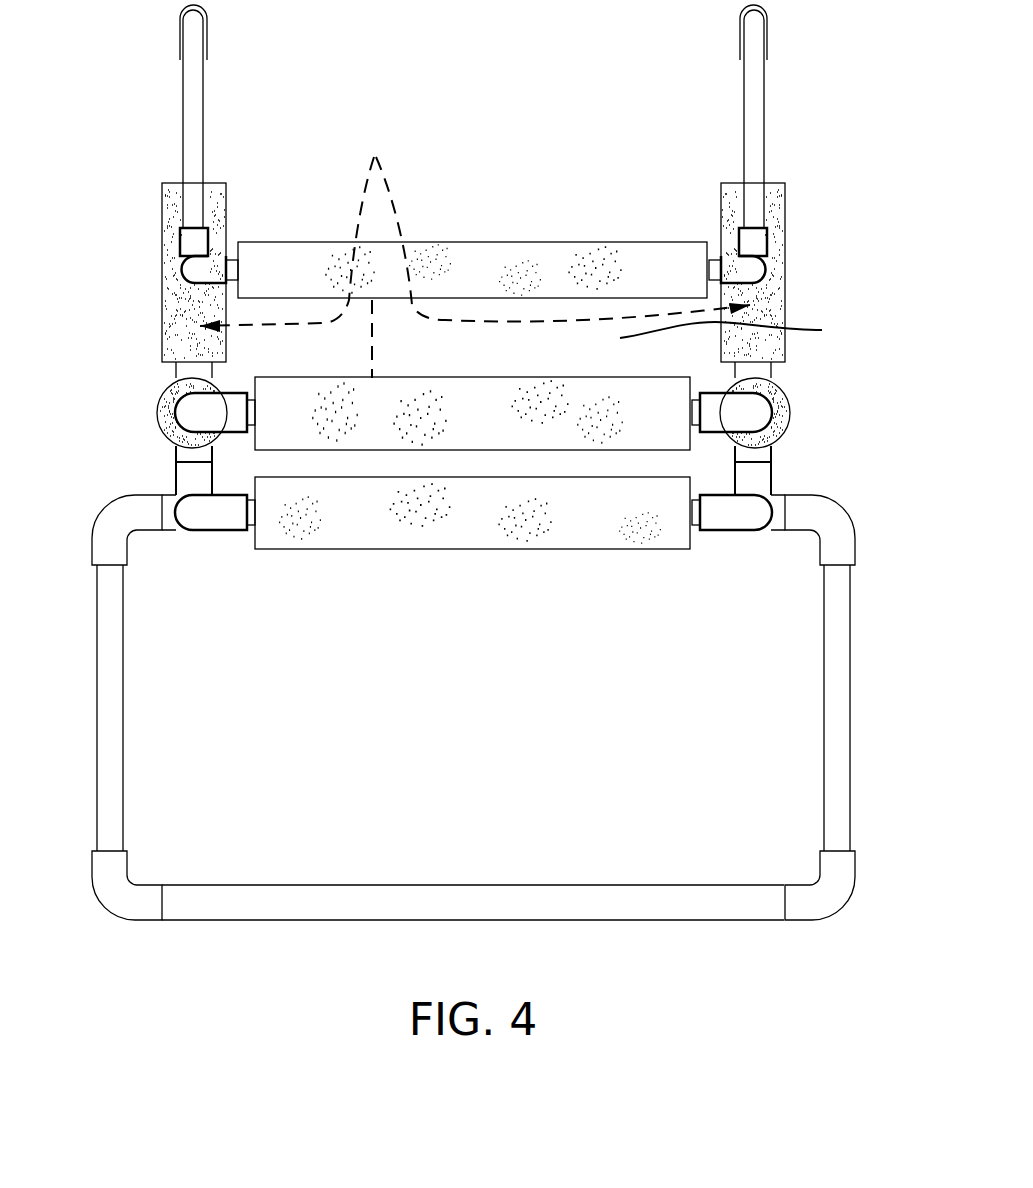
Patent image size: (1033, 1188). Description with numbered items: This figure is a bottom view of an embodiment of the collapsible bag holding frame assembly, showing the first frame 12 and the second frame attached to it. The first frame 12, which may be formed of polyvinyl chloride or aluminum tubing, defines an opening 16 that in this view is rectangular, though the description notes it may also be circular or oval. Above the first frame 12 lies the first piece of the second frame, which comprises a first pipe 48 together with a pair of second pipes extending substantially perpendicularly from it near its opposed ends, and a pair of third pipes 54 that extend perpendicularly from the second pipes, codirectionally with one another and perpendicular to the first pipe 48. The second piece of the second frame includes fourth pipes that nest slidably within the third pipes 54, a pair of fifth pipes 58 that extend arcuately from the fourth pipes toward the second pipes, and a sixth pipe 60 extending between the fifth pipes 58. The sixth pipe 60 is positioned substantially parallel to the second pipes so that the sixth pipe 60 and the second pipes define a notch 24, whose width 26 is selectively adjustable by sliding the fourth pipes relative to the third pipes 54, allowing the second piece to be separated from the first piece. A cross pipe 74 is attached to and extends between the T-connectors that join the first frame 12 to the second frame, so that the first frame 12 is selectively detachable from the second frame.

The first frame 12 is at (552, 767).
The opening 16 is at (708, 708).
The notch 24 is at (744, 329).
The width 26 is at (370, 340).
The first pipe 48 is at (543, 417).
The third pipes 54 is at (475, 222).
The fifth pipes 58 is at (193, 107).
The sixth pipe 60 is at (503, 277).
The cross pipe 74 is at (450, 500).